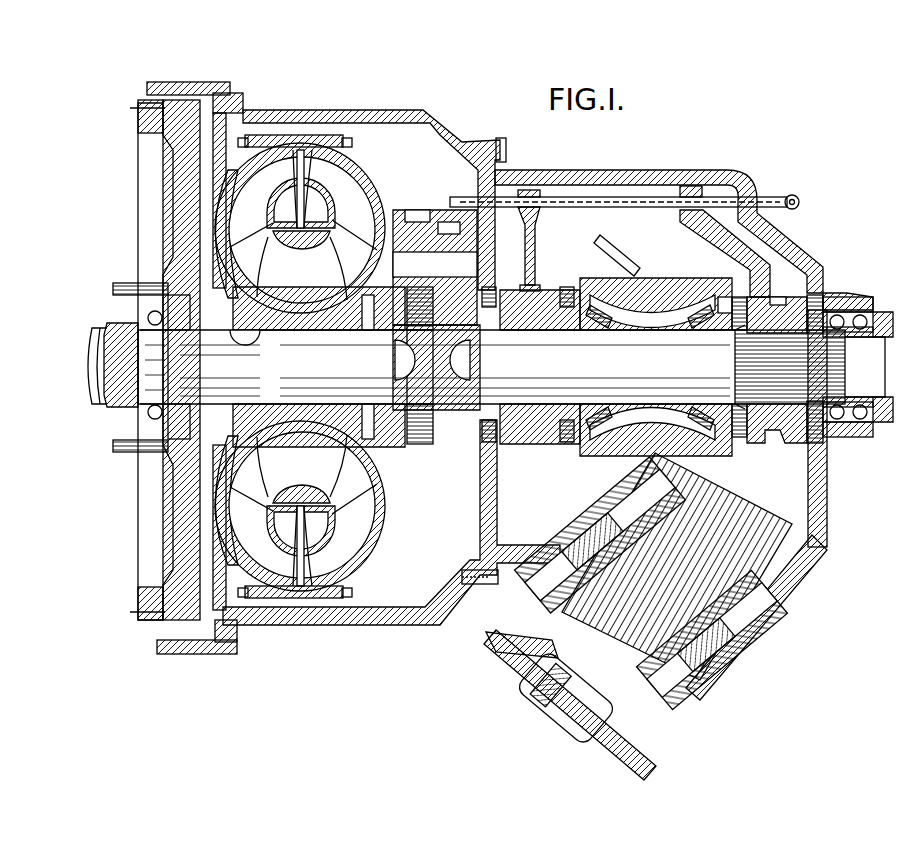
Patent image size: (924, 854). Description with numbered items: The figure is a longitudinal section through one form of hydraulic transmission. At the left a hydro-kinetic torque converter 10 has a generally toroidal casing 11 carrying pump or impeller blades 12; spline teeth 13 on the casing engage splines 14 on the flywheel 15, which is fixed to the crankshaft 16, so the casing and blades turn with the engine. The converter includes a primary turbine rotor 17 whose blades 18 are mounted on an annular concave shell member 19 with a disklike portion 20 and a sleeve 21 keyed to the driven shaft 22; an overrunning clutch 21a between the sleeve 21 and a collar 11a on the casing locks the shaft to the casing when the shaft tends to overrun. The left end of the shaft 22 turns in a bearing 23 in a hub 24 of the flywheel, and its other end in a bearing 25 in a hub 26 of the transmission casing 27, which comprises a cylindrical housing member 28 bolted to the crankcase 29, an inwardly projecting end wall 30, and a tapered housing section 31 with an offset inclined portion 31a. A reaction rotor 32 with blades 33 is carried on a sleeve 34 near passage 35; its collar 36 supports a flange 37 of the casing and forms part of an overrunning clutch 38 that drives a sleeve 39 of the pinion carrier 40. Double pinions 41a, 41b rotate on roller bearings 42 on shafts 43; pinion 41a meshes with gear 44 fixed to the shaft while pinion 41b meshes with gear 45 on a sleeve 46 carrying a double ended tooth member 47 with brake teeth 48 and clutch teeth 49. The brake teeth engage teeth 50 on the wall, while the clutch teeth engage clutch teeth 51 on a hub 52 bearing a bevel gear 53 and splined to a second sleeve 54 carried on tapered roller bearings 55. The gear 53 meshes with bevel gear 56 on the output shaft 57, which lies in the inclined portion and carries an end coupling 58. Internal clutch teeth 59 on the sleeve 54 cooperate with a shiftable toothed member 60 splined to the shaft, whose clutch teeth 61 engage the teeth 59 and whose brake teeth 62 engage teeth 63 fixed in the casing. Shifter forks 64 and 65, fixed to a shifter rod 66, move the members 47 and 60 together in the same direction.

The hydro-kinetic torque converter 10 is at (336, 135).
The toroidal casing 11 is at (352, 162).
The sleeve or collar 11a is at (212, 430).
The pump or impeller vanes or blades 12 is at (362, 188).
The spline teeth 13 is at (205, 285).
The splines 14 is at (196, 447).
The flywheel 15 is at (140, 130).
The crankshaft 16 is at (95, 350).
The primary turbine rotor 17 is at (266, 172).
The vanes or blades 18 is at (286, 162).
The annular concave shell member 19 is at (222, 196).
The disklike portion 20 is at (255, 432).
The sleeve 21 is at (225, 425).
The overrunning clutch 21a is at (205, 322).
The driven shaft 22 is at (122, 408).
The bearing 23 is at (148, 318).
The hub 24 is at (145, 452).
The bearing 25 is at (872, 314).
The hub 26 is at (858, 297).
The transmission casing 27 is at (675, 162).
The cylindrical housing member 28 is at (448, 130).
The crankcase 29 is at (215, 655).
The partition or end wall 30 is at (497, 508).
The tapered housing section 31 is at (724, 175).
The offset inclined portion 31a is at (766, 612).
The reaction rotor 32 is at (338, 260).
The turbine vanes or blades 33 is at (291, 267).
The sleeve 34 is at (324, 318).
The passage 35 is at (250, 334).
The annular collar 36 is at (368, 318).
The flange 37 is at (382, 292).
The overrunning clutch 38 is at (388, 318).
The sleeve 39 is at (436, 322).
The pinion carrier 40 is at (432, 482).
The pinion 41a is at (417, 212).
The pinion 41b is at (445, 224).
The needle or roller bearings 42 is at (435, 267).
The shafts 43 is at (468, 262).
The gear 44 is at (447, 412).
The gear 45 is at (480, 415).
The sleeve 46 is at (570, 320).
The double ended tooth member 47 is at (530, 425).
The brake teeth 48 is at (500, 351).
The clutch teeth 49 is at (557, 351).
The teeth 50 is at (533, 367).
The clutch teeth 51 is at (572, 282).
The hub 52 is at (636, 262).
The bevel gear 53 is at (680, 272).
The second sleeve 54 is at (712, 290).
The tapered roller bearings 55 is at (605, 320).
The bevel gear 56 is at (790, 538).
The output shaft 57 is at (660, 672).
The end coupling 58 is at (630, 736).
The internal clutch teeth 59 is at (742, 310).
The shiftable toothed member 60 is at (795, 330).
The clutch teeth 61 is at (760, 443).
The brake teeth 62 is at (797, 443).
The teeth 63 is at (828, 448).
The shifter fork 64 is at (528, 190).
The shifter fork 65 is at (692, 186).
The shifter rod 66 is at (774, 200).